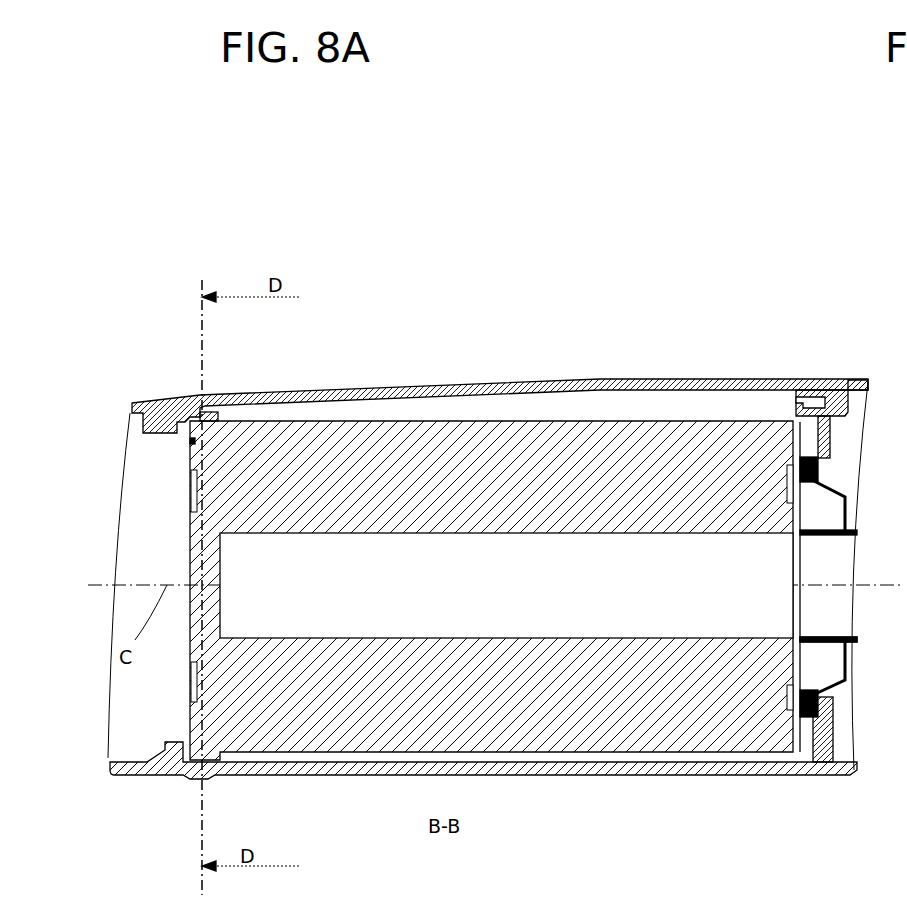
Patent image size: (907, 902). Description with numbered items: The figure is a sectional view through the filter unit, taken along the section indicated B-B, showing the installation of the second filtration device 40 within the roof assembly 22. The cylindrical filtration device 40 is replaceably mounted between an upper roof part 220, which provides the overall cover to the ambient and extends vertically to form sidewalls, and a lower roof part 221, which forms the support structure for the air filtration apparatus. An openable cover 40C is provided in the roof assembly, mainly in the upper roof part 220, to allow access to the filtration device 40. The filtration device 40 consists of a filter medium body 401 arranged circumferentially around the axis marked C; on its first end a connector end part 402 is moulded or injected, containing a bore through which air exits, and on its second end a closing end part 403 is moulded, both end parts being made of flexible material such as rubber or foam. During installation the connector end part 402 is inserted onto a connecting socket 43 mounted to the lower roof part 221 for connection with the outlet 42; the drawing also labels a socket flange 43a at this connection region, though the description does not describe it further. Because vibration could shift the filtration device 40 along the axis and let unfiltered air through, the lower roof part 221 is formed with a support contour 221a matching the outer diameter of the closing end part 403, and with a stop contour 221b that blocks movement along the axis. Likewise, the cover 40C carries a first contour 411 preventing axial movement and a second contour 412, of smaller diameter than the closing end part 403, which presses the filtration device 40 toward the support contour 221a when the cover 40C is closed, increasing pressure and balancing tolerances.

The roof assembly 22 is at (400, 372).
The second filtration device 40 is at (635, 438).
The openable cover 40C is at (497, 480).
The filter medium body 401 is at (543, 388).
The connector end part 402 is at (817, 523).
The closing end part 403 is at (193, 440).
The first contour 411 is at (175, 420).
The second contour 412 is at (206, 410).
The outlet 42 is at (855, 550).
The connecting socket 43 is at (850, 663).
The flange 43a is at (833, 638).
The upper roof part 220 is at (848, 380).
The lower roof part 221 is at (680, 766).
The support contour 221a is at (212, 777).
The stop contour 221b is at (140, 770).